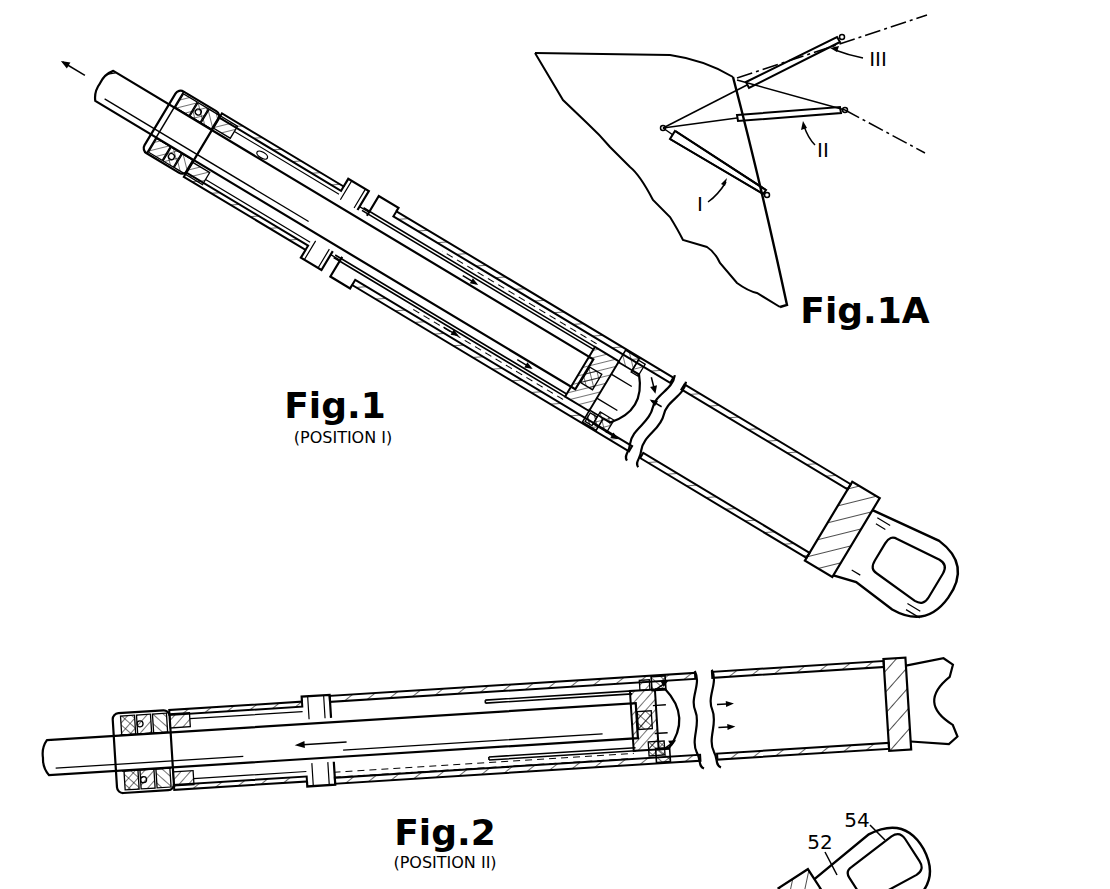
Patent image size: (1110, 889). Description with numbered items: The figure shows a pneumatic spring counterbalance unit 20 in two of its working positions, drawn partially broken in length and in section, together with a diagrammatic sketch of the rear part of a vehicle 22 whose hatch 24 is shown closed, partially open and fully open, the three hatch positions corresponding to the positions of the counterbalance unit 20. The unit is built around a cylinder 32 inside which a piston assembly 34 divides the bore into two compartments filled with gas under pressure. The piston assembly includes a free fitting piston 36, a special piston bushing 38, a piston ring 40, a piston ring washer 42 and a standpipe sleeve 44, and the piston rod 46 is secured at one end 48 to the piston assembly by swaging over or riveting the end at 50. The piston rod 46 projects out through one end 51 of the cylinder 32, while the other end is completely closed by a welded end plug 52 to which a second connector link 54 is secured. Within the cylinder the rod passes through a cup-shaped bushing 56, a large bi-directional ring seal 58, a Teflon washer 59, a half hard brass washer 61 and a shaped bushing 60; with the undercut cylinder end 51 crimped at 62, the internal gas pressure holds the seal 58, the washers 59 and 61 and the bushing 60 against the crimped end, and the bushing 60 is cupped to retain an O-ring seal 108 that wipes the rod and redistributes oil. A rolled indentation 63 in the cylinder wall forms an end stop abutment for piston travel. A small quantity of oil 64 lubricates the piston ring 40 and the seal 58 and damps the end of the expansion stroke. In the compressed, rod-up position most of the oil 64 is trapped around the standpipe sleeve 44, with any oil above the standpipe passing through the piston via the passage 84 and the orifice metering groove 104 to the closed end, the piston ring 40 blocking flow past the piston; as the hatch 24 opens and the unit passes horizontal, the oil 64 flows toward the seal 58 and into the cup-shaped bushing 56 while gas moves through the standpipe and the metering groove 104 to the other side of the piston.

In FIG. 1, the counterbalance unit 20 is at (420, 216).
In FIG. 1A, the counterbalance unit 20 is at (700, 150).
In FIG. 2, the counterbalance unit 20 is at (392, 668).
In FIG. 1A, the vehicle 22 is at (612, 75).
In FIG. 1A, the hatch 24 is at (907, 20).
In FIG. 1, the cylinder 32 is at (463, 262).
In FIG. 2, the cylinder 32 is at (473, 683).
In FIG. 1, the piston assembly 34 is at (687, 388).
In FIG. 1, the free fitting piston 36 is at (650, 370).
In FIG. 2, the free fitting piston 36 is at (643, 685).
In FIG. 1, the piston bushing 38 is at (605, 337).
In FIG. 2, the piston bushing 38 is at (625, 687).
In FIG. 1, the piston ring 40 is at (637, 352).
In FIG. 2, the piston ring 40 is at (633, 680).
In FIG. 1, the piston ring washer 42 is at (640, 360).
In FIG. 1, the standpipe sleeve 44 is at (537, 310).
In FIG. 2, the standpipe sleeve 44 is at (540, 697).
In FIG. 1, the piston rod 46 is at (497, 312).
In FIG. 2, the piston rod 46 is at (247, 732).
In FIG. 1, the shaft end 48 is at (602, 435).
In FIG. 2, the shaft end 48 is at (653, 757).
In FIG. 1, the swaged end 50 is at (637, 453).
In FIG. 1, the cylinder end 51 is at (190, 92).
In FIG. 1, the end plug 52 is at (847, 502).
In FIG. 2, the end plug 52 is at (900, 733).
In FIG. 1, the second connector link 54 is at (893, 520).
In FIG. 2, the second connector link 54 is at (947, 733).
In FIG. 1, the cup-shaped bushing 56 is at (265, 147).
In FIG. 2, the cup-shaped bushing 56 is at (222, 707).
In FIG. 1, the bi-directional ring seal 58 is at (238, 125).
In FIG. 2, the bi-directional ring seal 58 is at (173, 717).
In FIG. 1, the Teflon washer 59 is at (220, 115).
In FIG. 2, the Teflon washer 59 is at (160, 798).
In FIG. 1, the shaped bushing 60 is at (183, 95).
In FIG. 2, the shaped bushing 60 is at (130, 715).
In FIG. 1, the brass washer 61 is at (207, 100).
In FIG. 2, the brass washer 61 is at (155, 800).
In FIG. 1, the crimp 62 is at (173, 93).
In FIG. 1, the rolled indentation 63 is at (342, 187).
In FIG. 2, the rolled indentation 63 is at (308, 788).
In FIG. 1, the oil 64 is at (497, 362).
In FIG. 2, the oil 64 is at (337, 780).
In FIG. 1, the passage 84 is at (608, 348).
In FIG. 2, the passage 84 is at (627, 718).
In FIG. 1, the orifice metering groove 104 is at (593, 430).
In FIG. 2, the orifice metering groove 104 is at (640, 683).
In FIG. 1, the O-ring seal 108 is at (163, 170).
In FIG. 2, the O-ring seal 108 is at (140, 717).